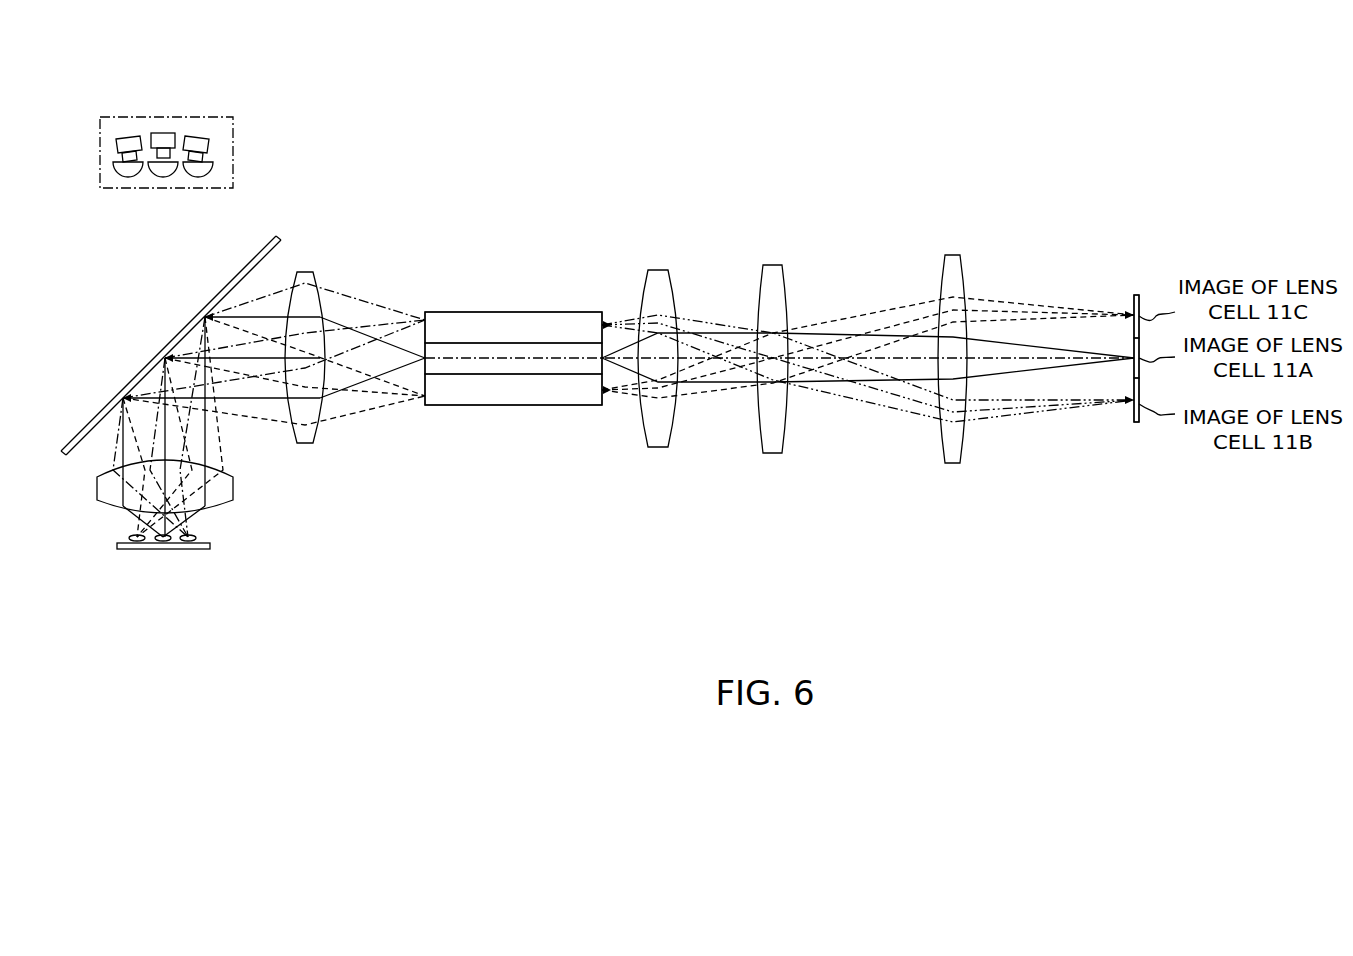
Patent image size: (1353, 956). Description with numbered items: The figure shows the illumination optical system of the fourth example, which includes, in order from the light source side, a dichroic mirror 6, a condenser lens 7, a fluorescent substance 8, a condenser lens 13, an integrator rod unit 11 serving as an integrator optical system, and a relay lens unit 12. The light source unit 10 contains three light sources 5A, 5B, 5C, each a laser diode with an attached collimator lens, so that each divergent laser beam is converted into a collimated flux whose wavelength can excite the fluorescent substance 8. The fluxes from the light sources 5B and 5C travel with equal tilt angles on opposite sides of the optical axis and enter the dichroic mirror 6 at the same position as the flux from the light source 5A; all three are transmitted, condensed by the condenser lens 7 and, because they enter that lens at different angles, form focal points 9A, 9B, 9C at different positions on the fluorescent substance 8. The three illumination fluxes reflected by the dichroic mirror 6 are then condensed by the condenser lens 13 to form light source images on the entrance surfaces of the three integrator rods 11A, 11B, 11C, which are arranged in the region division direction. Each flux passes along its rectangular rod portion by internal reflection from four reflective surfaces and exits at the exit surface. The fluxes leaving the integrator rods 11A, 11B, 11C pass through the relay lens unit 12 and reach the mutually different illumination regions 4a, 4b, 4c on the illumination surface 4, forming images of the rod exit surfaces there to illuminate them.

The light source unit 10 is at (100, 156).
The light source 5A is at (163, 133).
The light source 5B is at (128, 136).
The light source 5C is at (202, 136).
The dichroic mirror 6 is at (276, 234).
The condenser lens 7 is at (228, 490).
The fluorescent substance 8 is at (210, 547).
The focal point 9A is at (163, 546).
The focal point 9B is at (188, 546).
The focal point 9C is at (137, 546).
The condenser lens 13 is at (308, 444).
The integrator rod unit 11 is at (513, 379).
The integrator rod 11A is at (512, 347).
The integrator rod 11B is at (470, 318).
The integrator rod 11C is at (522, 397).
The relay lens unit 12 is at (818, 228).
The illumination surface 4 is at (1103, 367).
The illumination region 4a is at (1134, 378).
The illumination region 4b is at (1134, 420).
The illumination region 4c is at (1134, 306).